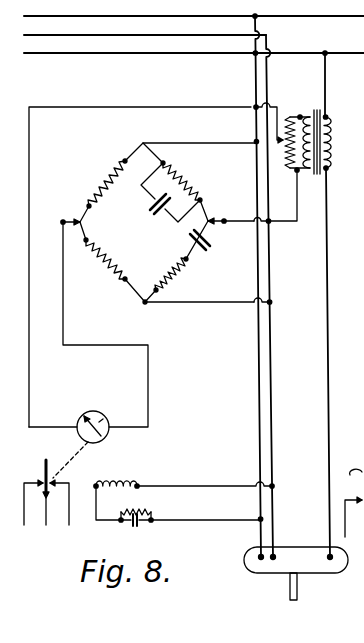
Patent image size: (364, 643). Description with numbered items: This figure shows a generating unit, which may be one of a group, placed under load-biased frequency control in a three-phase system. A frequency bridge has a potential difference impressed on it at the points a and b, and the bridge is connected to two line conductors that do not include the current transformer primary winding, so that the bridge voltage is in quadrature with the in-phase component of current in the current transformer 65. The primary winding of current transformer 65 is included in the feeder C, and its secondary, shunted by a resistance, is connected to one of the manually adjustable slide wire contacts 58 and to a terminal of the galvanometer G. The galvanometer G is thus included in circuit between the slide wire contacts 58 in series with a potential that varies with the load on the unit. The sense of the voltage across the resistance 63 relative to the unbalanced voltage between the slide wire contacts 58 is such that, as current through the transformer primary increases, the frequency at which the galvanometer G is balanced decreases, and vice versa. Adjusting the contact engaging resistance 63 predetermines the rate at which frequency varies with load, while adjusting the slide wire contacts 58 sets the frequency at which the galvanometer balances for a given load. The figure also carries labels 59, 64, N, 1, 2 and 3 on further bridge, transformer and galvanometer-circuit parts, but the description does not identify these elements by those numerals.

The slide wire contacts 58 is at (76, 216).
The bridge arm resistances 59 is at (88, 242).
The resistance 63 is at (288, 112).
The transformer primary coil 64 is at (308, 114).
The current transformer 65 is at (332, 128).
The switch blade 1 is at (47, 464).
The switch contact 2 is at (30, 481).
The switch contact 3 is at (62, 483).
The bridge resistance N is at (128, 185).
The bridge point a is at (146, 143).
The bridge point b is at (145, 304).
The galvanometer G is at (108, 436).
The feeder C is at (328, 349).